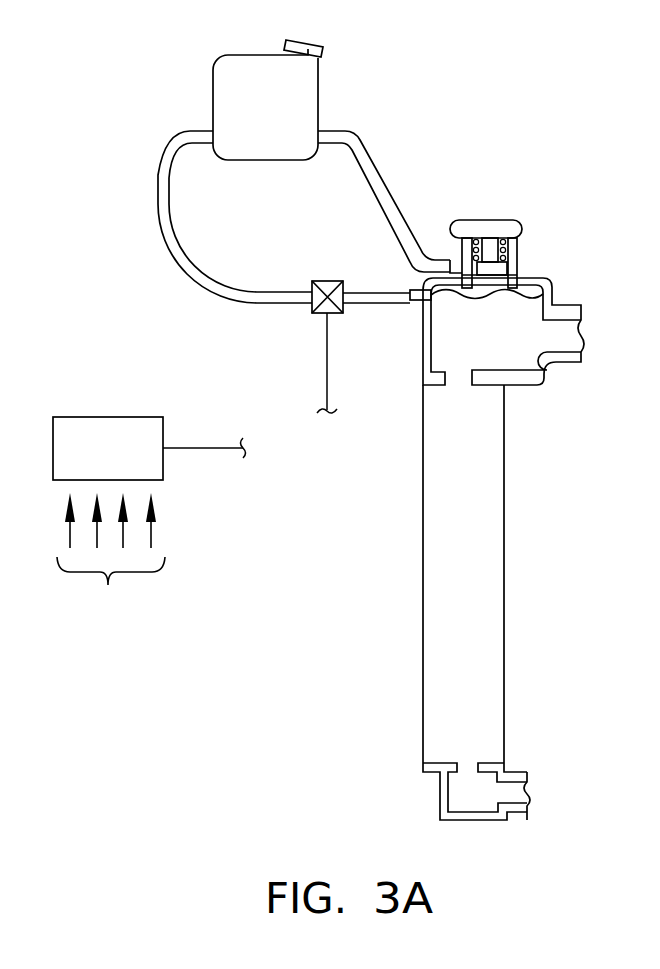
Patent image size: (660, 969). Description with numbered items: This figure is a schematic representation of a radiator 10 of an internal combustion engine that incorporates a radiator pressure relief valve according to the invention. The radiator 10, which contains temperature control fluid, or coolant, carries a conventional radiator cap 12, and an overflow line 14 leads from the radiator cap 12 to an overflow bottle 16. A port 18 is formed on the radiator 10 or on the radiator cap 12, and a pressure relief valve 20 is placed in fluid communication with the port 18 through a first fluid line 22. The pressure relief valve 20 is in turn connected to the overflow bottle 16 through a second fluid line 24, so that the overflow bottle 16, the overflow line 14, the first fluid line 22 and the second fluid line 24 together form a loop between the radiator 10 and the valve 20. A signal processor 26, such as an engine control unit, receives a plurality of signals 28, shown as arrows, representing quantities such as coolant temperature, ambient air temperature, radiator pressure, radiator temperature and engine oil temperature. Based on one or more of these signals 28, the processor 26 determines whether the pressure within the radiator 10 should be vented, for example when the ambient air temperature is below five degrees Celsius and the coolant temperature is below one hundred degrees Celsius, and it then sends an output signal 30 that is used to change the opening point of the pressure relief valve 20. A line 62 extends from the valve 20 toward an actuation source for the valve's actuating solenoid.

The radiator 10 is at (504, 466).
The radiator cap 12 is at (523, 225).
The overflow line 14 is at (393, 192).
The overflow bottle 16 is at (322, 92).
The port 18 is at (425, 280).
The pressure relief valve 20 is at (312, 302).
The first fluid line 22 is at (372, 302).
The second fluid line 24 is at (175, 228).
The signal processor 26 is at (82, 424).
The signals 28 is at (111, 554).
The output signal 30 is at (198, 448).
The line 62 is at (327, 378).